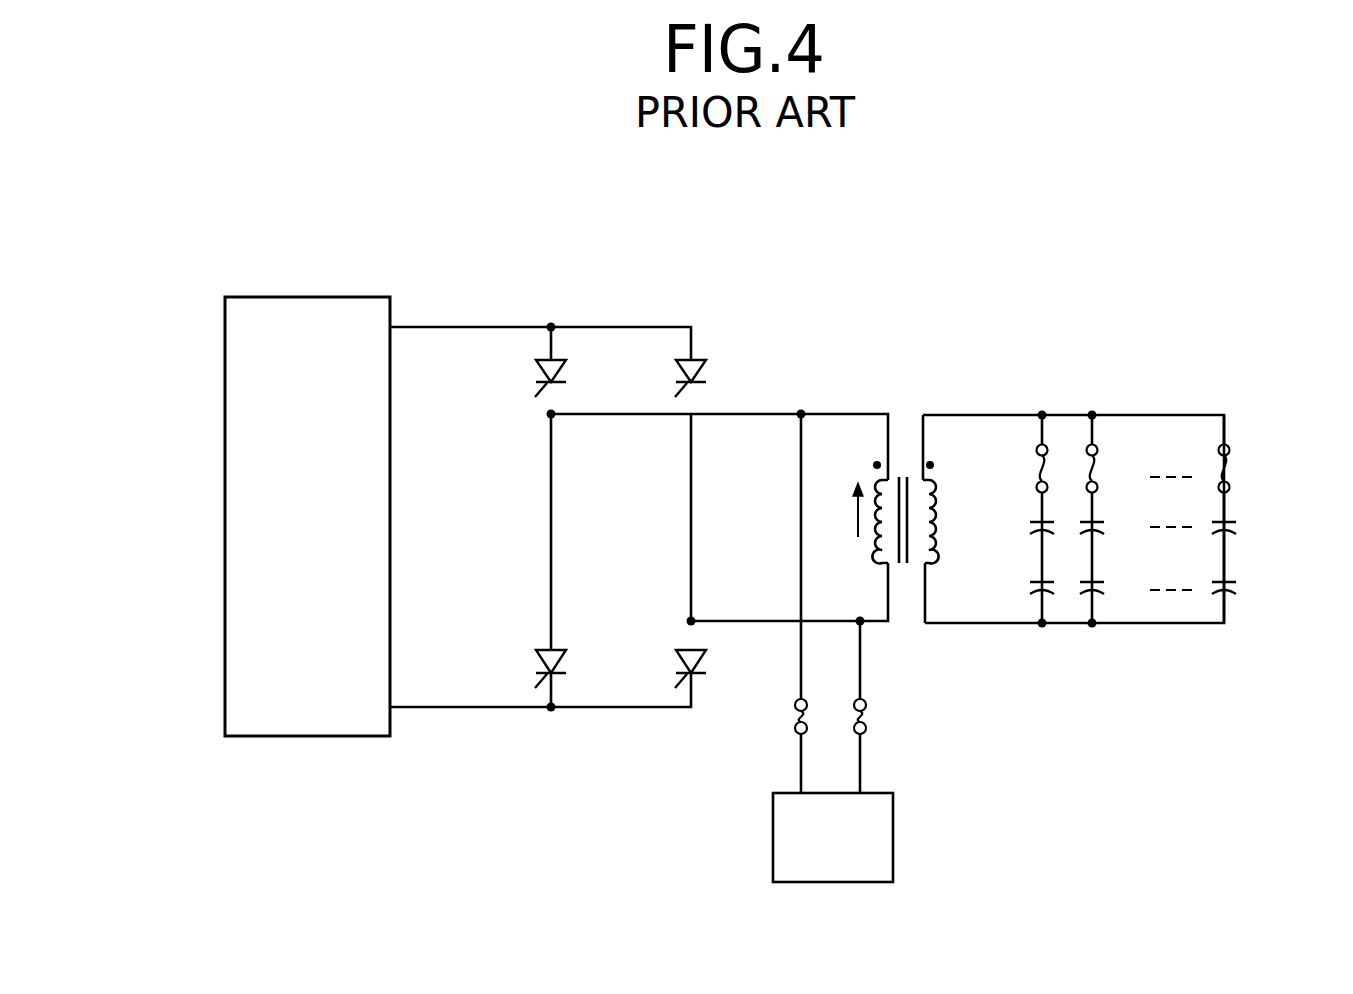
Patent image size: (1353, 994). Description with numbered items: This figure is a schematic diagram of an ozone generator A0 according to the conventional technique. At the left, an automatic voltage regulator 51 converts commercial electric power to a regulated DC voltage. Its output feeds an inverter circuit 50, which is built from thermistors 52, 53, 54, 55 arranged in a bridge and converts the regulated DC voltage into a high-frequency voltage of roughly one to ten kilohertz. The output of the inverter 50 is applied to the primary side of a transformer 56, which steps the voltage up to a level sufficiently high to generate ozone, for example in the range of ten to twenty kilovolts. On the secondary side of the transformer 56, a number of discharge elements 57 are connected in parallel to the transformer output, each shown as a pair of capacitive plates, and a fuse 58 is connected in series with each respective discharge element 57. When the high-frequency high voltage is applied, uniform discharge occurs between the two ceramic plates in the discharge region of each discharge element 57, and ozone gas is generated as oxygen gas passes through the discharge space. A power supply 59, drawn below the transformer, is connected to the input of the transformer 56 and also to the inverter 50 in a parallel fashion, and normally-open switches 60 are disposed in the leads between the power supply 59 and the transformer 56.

The ozone generator A0 is at (916, 314).
The inverter circuit 50 is at (669, 770).
The automatic voltage regulator 51 is at (318, 297).
The thermistor 52 is at (560, 380).
The thermistor 53 is at (700, 380).
The thermistor 54 is at (545, 655).
The thermistor 55 is at (683, 655).
The transformer 56 is at (900, 465).
The discharge element 57 is at (1040, 555).
The fuse 58 is at (1037, 468).
The power supply 59 is at (893, 835).
The normally-open switch 60 is at (868, 718).